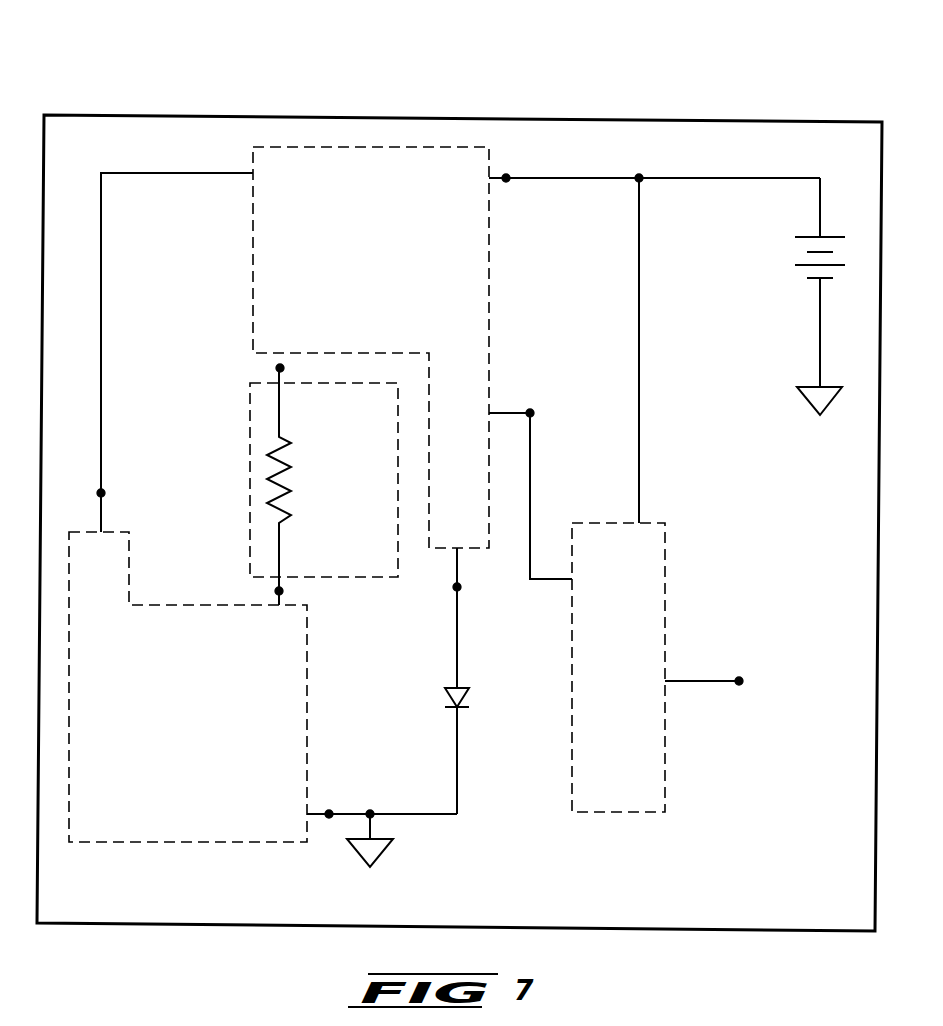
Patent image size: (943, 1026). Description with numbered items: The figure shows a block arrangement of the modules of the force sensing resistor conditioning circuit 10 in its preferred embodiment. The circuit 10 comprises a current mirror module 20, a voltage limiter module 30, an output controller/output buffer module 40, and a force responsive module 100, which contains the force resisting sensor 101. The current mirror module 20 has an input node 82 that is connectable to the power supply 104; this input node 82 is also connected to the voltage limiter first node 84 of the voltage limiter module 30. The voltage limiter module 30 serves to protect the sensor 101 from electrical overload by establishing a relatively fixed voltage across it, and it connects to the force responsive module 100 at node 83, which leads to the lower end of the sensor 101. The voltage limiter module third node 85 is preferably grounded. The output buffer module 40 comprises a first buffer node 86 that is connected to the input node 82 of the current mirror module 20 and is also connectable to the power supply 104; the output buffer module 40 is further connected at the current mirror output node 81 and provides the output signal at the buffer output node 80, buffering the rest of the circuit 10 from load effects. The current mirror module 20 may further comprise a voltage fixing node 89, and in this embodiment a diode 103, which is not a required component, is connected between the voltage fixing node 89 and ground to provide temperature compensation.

The force sensing resistor conditioning circuit 10 is at (587, 112).
The current mirror module 20 is at (243, 207).
The voltage limiter module 30 is at (161, 855).
The output controller/output buffer module 40 is at (678, 749).
The buffer output node 80 is at (739, 681).
The output node 81 is at (530, 413).
The input node 82 is at (506, 178).
The node 83 is at (280, 368).
The voltage limiter first node 84 is at (101, 493).
The voltage limiter module third node 85 is at (329, 814).
The first buffer node 86 is at (639, 178).
The voltage fixing node 89 is at (457, 587).
The force responsive module 100 is at (238, 449).
The force resisting sensor 101 is at (272, 512).
The diode 103 is at (468, 698).
The power supply 104 is at (798, 254).